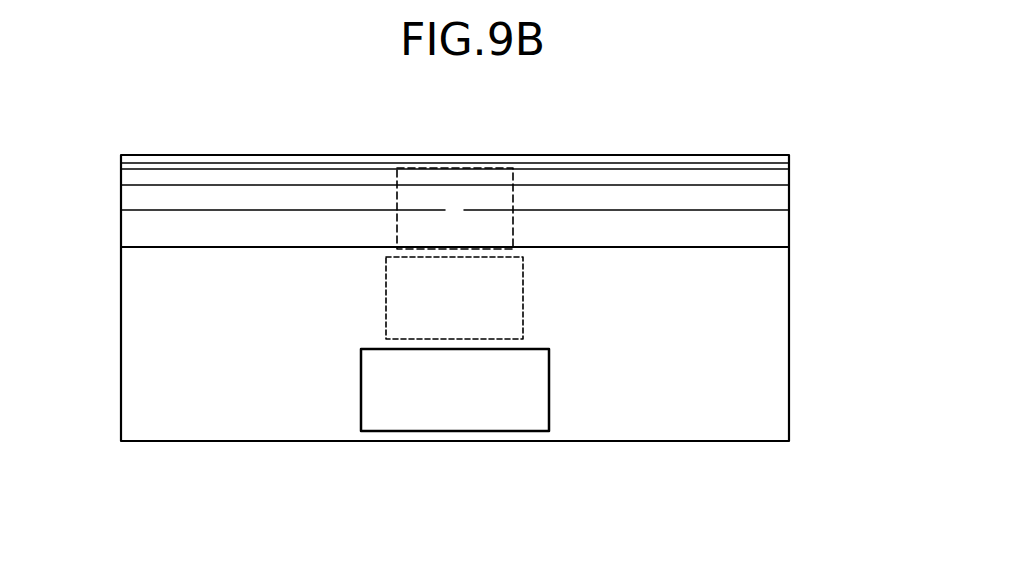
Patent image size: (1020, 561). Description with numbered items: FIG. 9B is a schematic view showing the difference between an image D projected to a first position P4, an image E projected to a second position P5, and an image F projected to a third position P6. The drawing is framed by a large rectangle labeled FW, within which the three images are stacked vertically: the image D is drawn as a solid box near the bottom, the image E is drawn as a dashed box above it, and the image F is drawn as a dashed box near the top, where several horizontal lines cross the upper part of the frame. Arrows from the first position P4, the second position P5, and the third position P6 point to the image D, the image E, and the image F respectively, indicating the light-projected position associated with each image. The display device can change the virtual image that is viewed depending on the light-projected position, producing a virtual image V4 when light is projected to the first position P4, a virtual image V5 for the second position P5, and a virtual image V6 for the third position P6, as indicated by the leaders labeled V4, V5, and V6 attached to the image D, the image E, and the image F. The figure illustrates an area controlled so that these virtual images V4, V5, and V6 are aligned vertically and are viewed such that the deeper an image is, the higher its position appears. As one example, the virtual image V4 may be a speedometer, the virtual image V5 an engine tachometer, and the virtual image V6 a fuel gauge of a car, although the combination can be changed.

The flexible wiring board FW is at (790, 386).
The first position P4 is at (334, 395).
The second position P5 is at (365, 309).
The third position P6 is at (370, 225).
The virtual image V4 is at (455, 426).
The virtual image V5 is at (636, 298).
The virtual image V6 is at (455, 178).
The image D is at (455, 390).
The image E is at (454, 298).
The image F is at (455, 208).